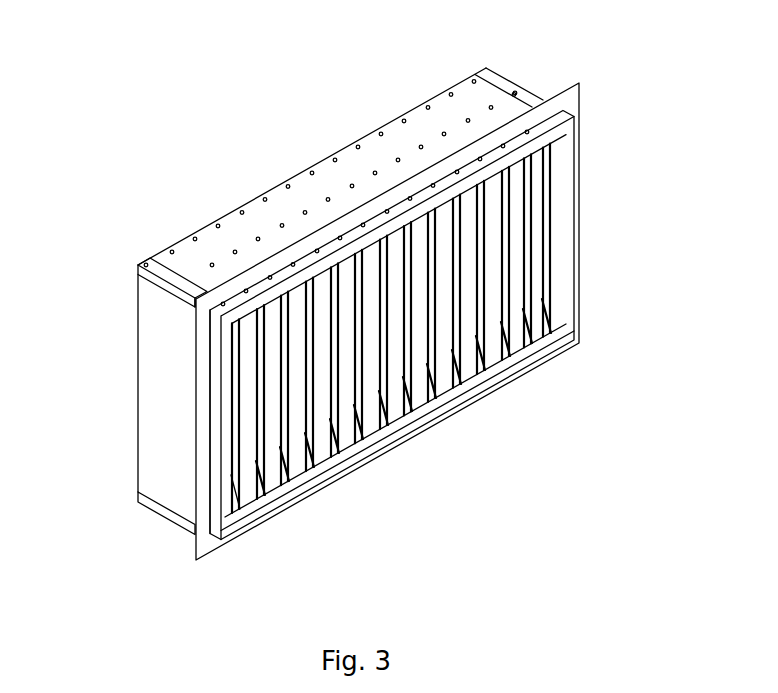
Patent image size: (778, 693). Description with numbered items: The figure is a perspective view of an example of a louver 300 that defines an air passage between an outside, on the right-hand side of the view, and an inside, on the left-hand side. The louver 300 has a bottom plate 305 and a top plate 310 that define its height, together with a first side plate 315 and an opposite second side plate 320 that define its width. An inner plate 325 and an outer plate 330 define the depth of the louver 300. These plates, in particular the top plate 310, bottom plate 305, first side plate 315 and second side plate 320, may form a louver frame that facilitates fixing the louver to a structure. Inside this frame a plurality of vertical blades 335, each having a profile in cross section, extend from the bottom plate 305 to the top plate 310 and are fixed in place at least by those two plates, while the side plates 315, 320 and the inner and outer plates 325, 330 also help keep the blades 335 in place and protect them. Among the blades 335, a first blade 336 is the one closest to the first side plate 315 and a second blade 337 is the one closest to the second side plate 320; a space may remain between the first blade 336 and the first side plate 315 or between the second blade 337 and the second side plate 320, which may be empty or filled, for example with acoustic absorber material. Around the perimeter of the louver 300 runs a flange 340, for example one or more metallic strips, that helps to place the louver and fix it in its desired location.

The louver 300 is at (255, 160).
The bottom plate 305 is at (163, 524).
The top plate 310 is at (352, 168).
The first side plate 315 is at (158, 392).
The second side plate 320 is at (526, 76).
The inner plate 325 is at (473, 64).
The outer plate 330 is at (578, 338).
The vertical blades 335 is at (397, 471).
The first blade 336 is at (250, 508).
The second blade 337 is at (550, 334).
The flange 340 is at (213, 300).